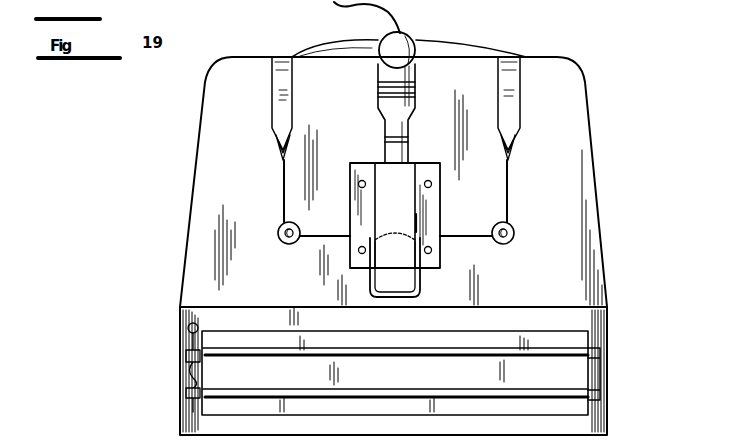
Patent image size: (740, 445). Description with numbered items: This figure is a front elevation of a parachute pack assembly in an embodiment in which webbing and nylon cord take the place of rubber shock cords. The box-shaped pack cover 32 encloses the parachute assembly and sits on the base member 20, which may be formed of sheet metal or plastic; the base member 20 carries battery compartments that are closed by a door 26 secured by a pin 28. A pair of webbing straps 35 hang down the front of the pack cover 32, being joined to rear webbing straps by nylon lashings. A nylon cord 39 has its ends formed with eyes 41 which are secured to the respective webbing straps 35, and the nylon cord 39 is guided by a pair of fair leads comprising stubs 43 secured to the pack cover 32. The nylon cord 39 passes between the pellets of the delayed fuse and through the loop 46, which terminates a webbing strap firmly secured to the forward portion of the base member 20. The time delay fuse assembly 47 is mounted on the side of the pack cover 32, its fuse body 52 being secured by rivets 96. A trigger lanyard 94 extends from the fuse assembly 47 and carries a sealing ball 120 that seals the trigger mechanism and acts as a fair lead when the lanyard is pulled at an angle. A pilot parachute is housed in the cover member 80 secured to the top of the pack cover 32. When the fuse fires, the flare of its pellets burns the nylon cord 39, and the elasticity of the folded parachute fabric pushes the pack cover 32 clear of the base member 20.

The base member 20 is at (608, 378).
The door 26 is at (575, 338).
The pin 28 is at (185, 330).
The pack cover 32 is at (603, 255).
The webbing straps 35 is at (296, 92).
The nylon cord 39 is at (512, 210).
The eyes 41 is at (279, 160).
The stubs 43 is at (282, 241).
The loop 46 is at (423, 298).
The time delay fuse assembly 47 is at (426, 159).
The fuse body 52 is at (417, 222).
The pilot parachute cover member 80 is at (478, 43).
The trigger lanyard 94 is at (402, 33).
The rivets 96 is at (363, 180).
The sealing ball 120 is at (378, 36).